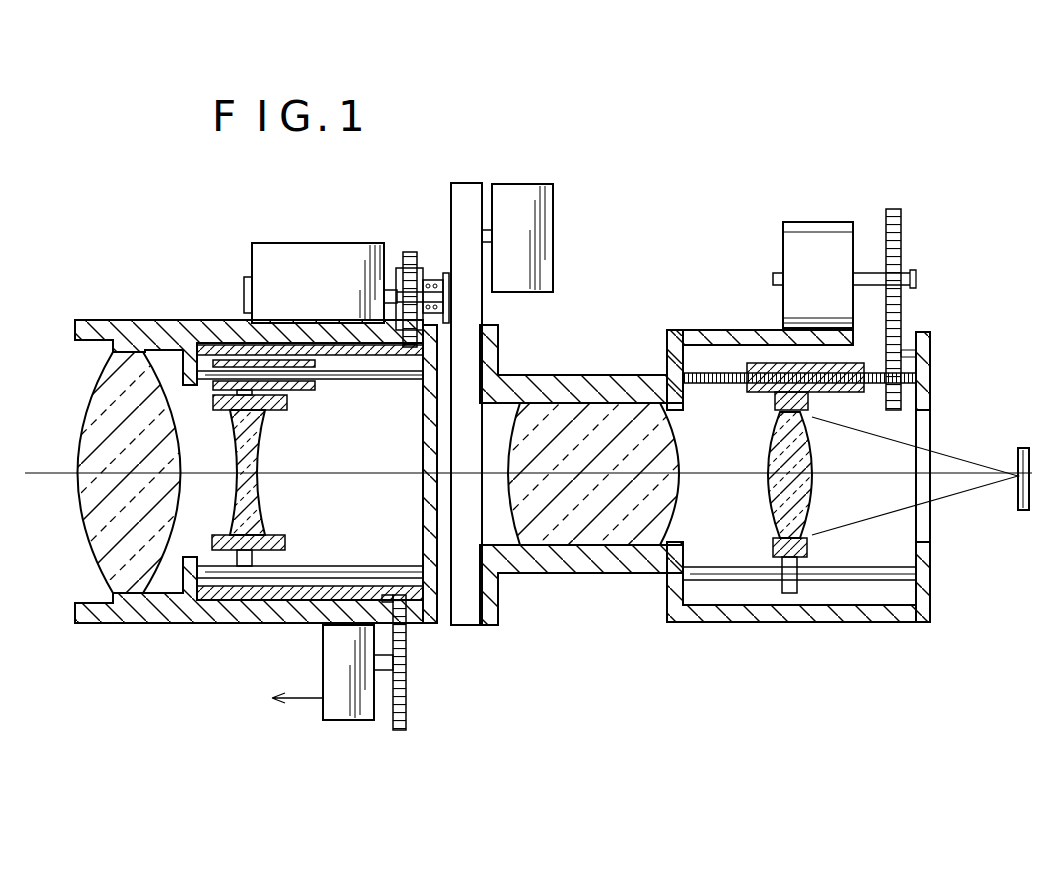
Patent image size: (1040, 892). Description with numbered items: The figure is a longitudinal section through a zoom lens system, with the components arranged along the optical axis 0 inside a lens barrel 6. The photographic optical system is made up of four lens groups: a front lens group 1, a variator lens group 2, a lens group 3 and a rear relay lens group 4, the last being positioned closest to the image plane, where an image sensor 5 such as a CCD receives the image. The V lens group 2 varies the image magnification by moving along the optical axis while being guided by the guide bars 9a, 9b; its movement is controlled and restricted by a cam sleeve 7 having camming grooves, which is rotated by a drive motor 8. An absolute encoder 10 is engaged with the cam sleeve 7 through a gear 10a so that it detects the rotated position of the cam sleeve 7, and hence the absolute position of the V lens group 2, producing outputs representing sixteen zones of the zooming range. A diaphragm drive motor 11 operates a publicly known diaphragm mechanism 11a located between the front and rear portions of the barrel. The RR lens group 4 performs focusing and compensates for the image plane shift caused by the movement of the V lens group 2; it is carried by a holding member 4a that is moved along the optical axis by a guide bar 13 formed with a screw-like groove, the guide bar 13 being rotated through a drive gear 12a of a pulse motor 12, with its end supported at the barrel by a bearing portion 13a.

The optical axis 0 is at (46, 472).
The lens group 1 is at (96, 553).
The variator lens group 2 is at (264, 513).
The lens group 3 is at (552, 540).
The rear relay lens group 4 is at (806, 508).
The holding member 4a is at (778, 406).
The image sensor 5 is at (1018, 464).
The lens barrel 6 is at (118, 320).
The cam sleeve 7 is at (342, 356).
The drive motor 8 is at (297, 243).
The guide bar 9a is at (397, 380).
The guide bar 9b is at (374, 567).
The absolute encoder 10 is at (323, 660).
The gear 10a is at (406, 692).
The diaphragm drive motor 11 is at (518, 184).
The diaphragm mechanism 11a is at (462, 183).
The pulse motor 12 is at (797, 222).
The drive gear 12a is at (893, 209).
The guide bar 13 is at (706, 373).
The screw bearing 13a is at (901, 352).